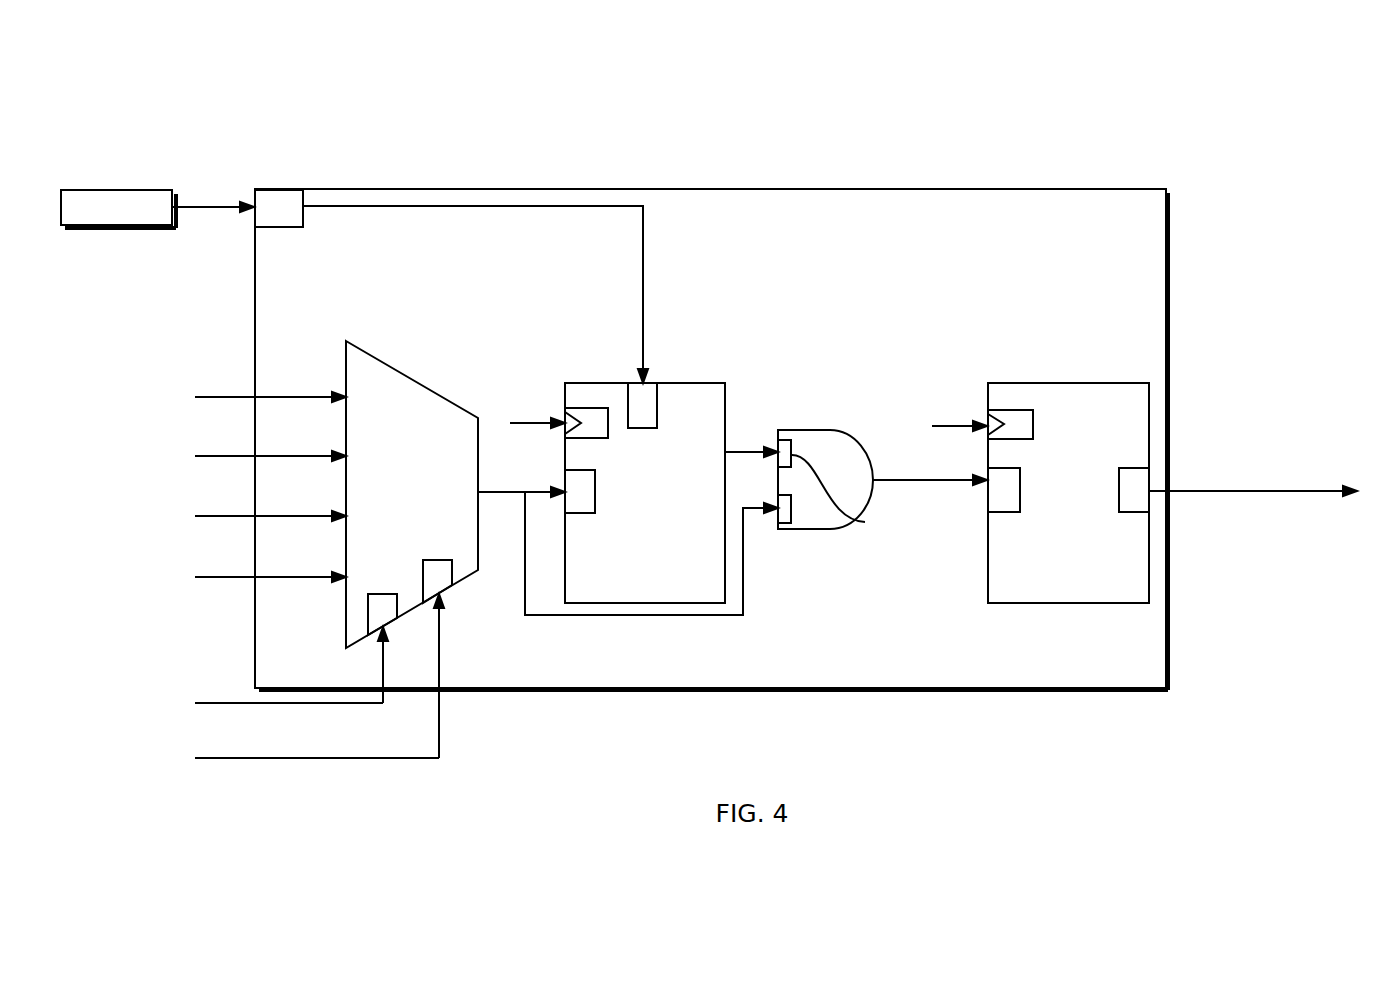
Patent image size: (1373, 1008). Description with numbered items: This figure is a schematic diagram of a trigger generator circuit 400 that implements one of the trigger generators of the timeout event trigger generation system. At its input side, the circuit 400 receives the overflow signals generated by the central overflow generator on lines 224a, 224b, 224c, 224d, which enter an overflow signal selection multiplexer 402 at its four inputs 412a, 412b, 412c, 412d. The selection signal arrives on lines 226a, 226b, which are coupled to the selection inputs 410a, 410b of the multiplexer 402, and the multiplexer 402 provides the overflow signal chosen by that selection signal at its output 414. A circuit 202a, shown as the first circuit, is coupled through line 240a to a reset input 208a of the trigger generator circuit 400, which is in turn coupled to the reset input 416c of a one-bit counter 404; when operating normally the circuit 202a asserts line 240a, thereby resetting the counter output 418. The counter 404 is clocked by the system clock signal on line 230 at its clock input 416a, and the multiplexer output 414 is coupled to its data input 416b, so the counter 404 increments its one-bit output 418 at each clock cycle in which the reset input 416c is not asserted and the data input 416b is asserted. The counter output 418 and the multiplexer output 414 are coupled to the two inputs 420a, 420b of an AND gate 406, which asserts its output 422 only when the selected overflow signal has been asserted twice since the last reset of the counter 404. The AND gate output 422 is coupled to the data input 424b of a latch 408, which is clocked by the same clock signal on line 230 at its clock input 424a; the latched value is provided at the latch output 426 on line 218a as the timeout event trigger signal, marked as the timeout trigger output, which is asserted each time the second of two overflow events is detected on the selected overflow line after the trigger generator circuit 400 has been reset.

The circuit 202a is at (136, 190).
The line 240a is at (226, 205).
The reset input 208a is at (263, 228).
The trigger generator circuit 400 is at (1072, 189).
The overflow signal selection multiplexer 402 is at (385, 363).
The overflow signal line 224a is at (212, 577).
The overflow signal line 224b is at (212, 516).
The overflow signal line 224c is at (212, 456).
The overflow signal line 224d is at (212, 397).
The mux input a 412a is at (345, 573).
The mux input b 412b is at (345, 512).
The mux input c 412c is at (345, 452).
The mux input d 412d is at (345, 393).
The selection input 410a is at (368, 600).
The selection input 410b is at (457, 578).
The selection signal line 226a is at (215, 703).
The selection signal line 226b is at (205, 758).
The multiplexer output 414 is at (480, 490).
The clock signal line 230 is at (538, 423).
The one-bit counter 404 is at (685, 383).
The clock input 416a is at (588, 408).
The data input 416b is at (590, 514).
The reset input 416c is at (643, 428).
The counter output 418 is at (728, 452).
The AND gate 406 is at (820, 430).
The gate input a 420a is at (850, 518).
The gate input b 420b is at (795, 523).
The AND gate output 422 is at (878, 480).
The latch 408 is at (1092, 383).
The clock input 424a is at (1033, 420).
The data input 424b is at (1020, 500).
The latch output 426 is at (1117, 494).
The timeout trigger line 218a is at (1200, 491).